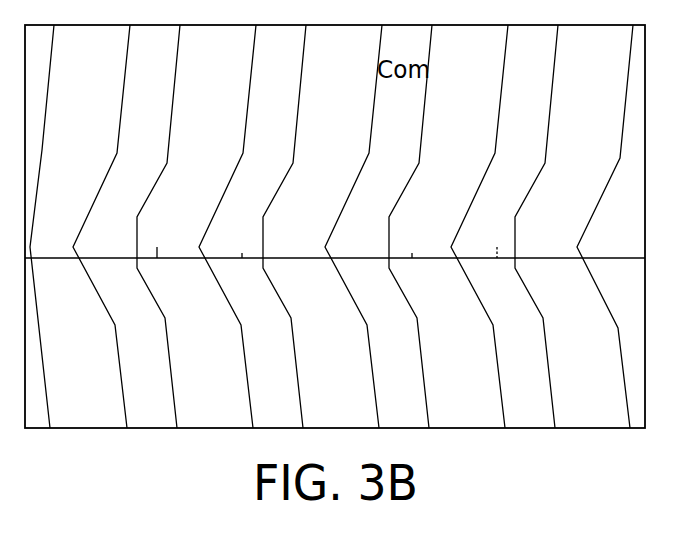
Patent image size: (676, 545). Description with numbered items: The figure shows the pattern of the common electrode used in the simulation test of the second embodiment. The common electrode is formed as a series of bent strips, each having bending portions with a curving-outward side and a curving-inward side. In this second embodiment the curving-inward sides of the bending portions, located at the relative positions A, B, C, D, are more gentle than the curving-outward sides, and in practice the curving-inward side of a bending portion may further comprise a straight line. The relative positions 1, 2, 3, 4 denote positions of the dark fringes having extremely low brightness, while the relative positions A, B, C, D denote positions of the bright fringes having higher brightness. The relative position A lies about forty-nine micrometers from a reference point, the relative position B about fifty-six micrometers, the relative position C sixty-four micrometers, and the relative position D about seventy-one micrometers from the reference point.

The relative position 1 is at (175, 258).
The relative position 2 is at (297, 258).
The relative position 3 is at (422, 258).
The relative position 4 is at (550, 258).
The relative position A is at (152, 258).
The relative position B is at (277, 258).
The relative position C is at (404, 258).
The relative position D is at (527, 258).